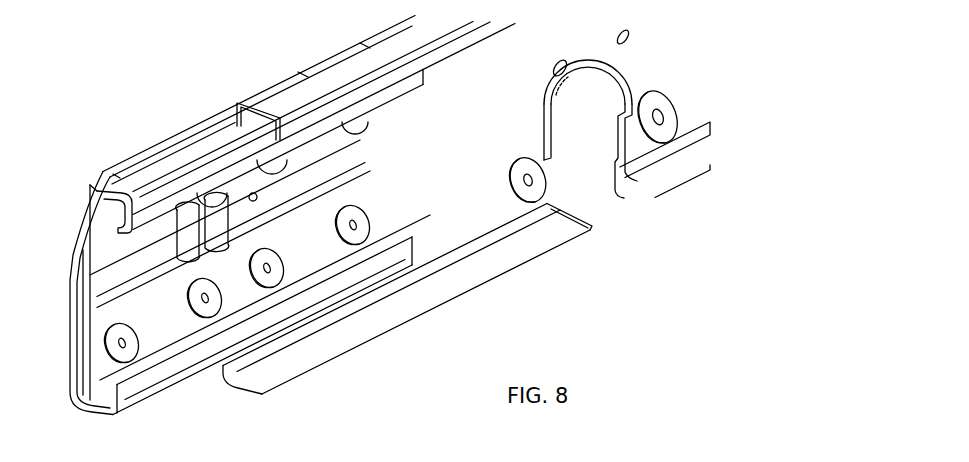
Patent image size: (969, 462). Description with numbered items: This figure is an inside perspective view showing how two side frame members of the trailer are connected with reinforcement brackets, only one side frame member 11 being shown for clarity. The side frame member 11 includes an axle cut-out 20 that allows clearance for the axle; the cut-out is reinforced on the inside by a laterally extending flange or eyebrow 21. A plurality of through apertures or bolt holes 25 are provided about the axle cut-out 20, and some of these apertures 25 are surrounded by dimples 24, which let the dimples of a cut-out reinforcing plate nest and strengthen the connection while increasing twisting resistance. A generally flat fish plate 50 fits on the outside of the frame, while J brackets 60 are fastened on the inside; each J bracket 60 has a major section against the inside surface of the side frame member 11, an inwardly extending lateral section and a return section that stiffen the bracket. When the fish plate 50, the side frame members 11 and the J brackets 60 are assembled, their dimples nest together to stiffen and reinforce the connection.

The side frame member 11 is at (493, 262).
The axle cut-out 20 is at (621, 132).
The eyebrow 21 is at (627, 80).
The dimples 24 is at (522, 181).
The apertures 25 is at (565, 59).
The fish plate 50 is at (82, 288).
The J bracket 60 is at (404, 86).